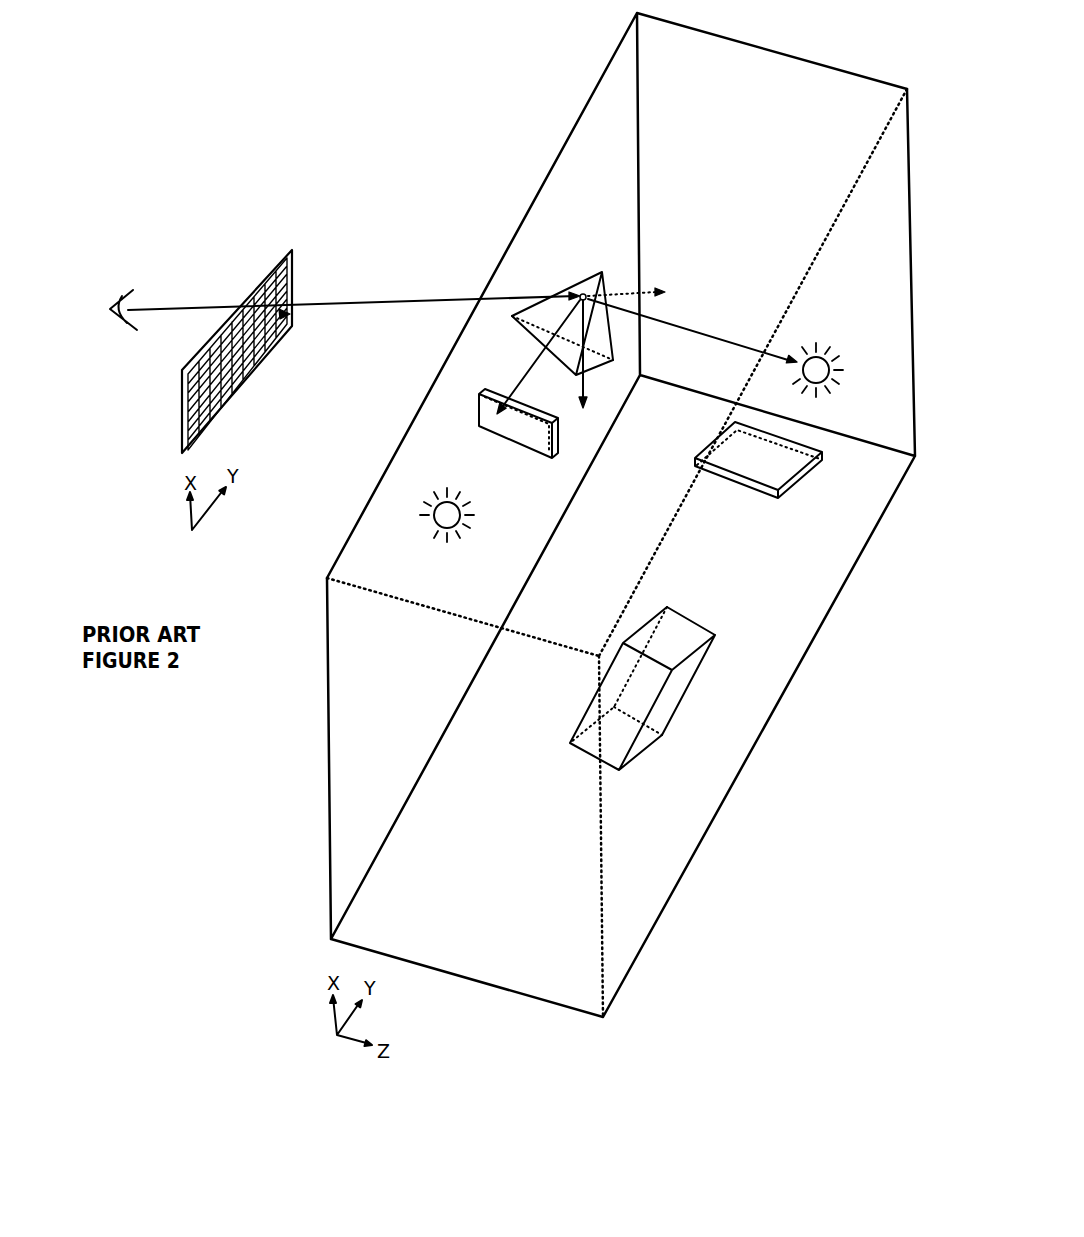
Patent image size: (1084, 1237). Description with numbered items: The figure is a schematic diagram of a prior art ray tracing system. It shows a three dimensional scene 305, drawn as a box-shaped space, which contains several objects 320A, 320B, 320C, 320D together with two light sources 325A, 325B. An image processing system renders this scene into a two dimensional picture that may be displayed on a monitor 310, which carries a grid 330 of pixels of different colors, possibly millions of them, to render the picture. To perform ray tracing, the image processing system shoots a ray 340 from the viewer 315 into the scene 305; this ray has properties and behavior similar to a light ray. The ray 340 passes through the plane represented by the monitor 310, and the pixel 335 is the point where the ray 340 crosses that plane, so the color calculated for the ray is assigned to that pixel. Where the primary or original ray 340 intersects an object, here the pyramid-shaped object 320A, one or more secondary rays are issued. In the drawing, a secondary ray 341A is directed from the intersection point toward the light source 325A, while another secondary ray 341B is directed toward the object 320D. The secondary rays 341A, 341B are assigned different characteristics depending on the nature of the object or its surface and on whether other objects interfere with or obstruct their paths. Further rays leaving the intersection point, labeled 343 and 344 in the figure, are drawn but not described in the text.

The three dimensional scene 305 is at (567, 1030).
The monitor 310 is at (296, 281).
The viewer 315 is at (117, 296).
The object 320A is at (590, 274).
The object 320B is at (744, 488).
The object 320C is at (575, 741).
The object 320D is at (510, 446).
The light source 325A is at (826, 357).
The light source 325B is at (434, 526).
The grid of pixels 330 is at (183, 424).
The pixel 335 is at (291, 316).
The ray 340 is at (410, 300).
The secondary ray 341A is at (688, 330).
The secondary ray 341B is at (533, 362).
The reflected ray Rr 343 is at (590, 388).
The transmitted (refracted) ray Tr 344 is at (647, 293).